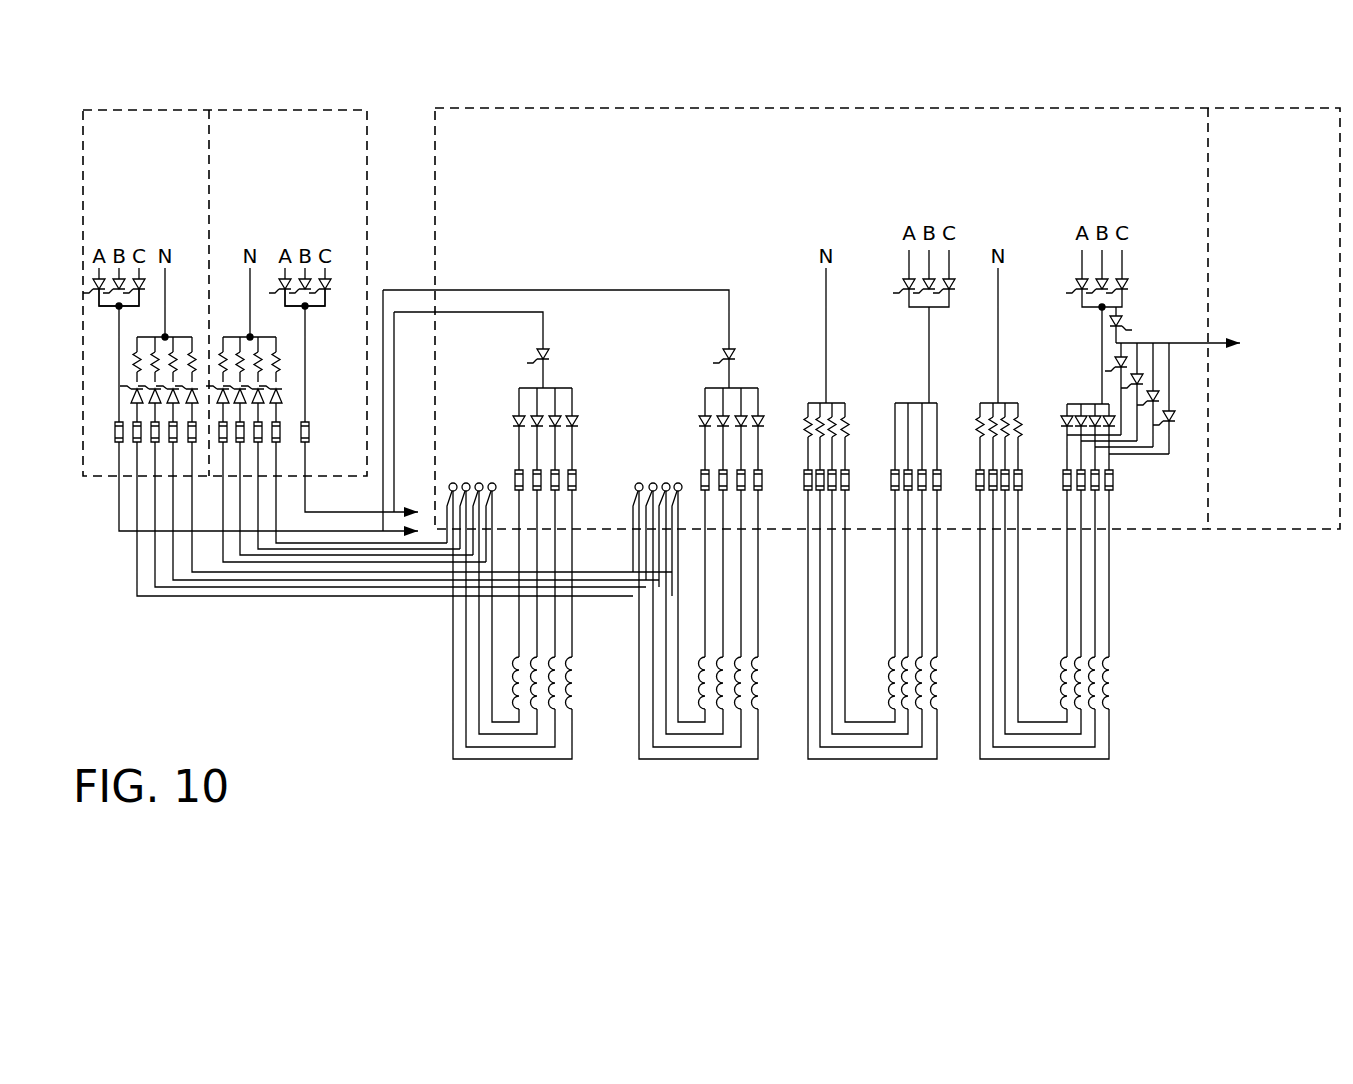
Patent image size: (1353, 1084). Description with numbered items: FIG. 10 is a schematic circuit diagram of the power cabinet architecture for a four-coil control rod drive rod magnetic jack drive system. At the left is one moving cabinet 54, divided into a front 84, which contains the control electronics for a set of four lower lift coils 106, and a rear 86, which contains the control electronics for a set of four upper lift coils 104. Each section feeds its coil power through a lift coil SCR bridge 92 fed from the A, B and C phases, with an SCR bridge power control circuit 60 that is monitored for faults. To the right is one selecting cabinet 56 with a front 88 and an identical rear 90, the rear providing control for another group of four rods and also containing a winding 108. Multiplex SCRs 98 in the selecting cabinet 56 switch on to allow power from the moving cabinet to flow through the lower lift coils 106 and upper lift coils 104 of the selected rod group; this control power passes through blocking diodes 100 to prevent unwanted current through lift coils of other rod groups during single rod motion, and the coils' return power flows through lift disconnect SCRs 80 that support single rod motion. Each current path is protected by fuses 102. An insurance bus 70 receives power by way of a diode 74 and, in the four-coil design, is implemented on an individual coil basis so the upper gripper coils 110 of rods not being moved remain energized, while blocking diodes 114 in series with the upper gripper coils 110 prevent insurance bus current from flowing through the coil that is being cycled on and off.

The moving cabinet 54 is at (200, 108).
The selecting cabinet 56 is at (872, 108).
The front section of moving cabinet 84 is at (152, 168).
The rear section of moving cabinet 86 is at (295, 168).
The front section of selecting cabinet 88 is at (645, 212).
The rear section of selecting cabinet 90 is at (1290, 212).
The lift coil SCR bridge 92 is at (121, 246).
The SCR bridge power control circuit 60 is at (105, 312).
The lift disconnect SCRs 80 is at (287, 398).
The fuses 102 is at (285, 443).
The multiplex SCRs 98 is at (538, 352).
The blocking diodes 100 is at (583, 412).
The blocking diodes 114 is at (1062, 410).
The diode 74 is at (1125, 320).
The insurance bus 70 is at (1180, 343).
The upper lift coils 104 is at (578, 697).
The lower lift coils 106 is at (975, 777).
The third transformer winding 108 is at (1112, 697).
The upper gripper coils 110 is at (1110, 697).